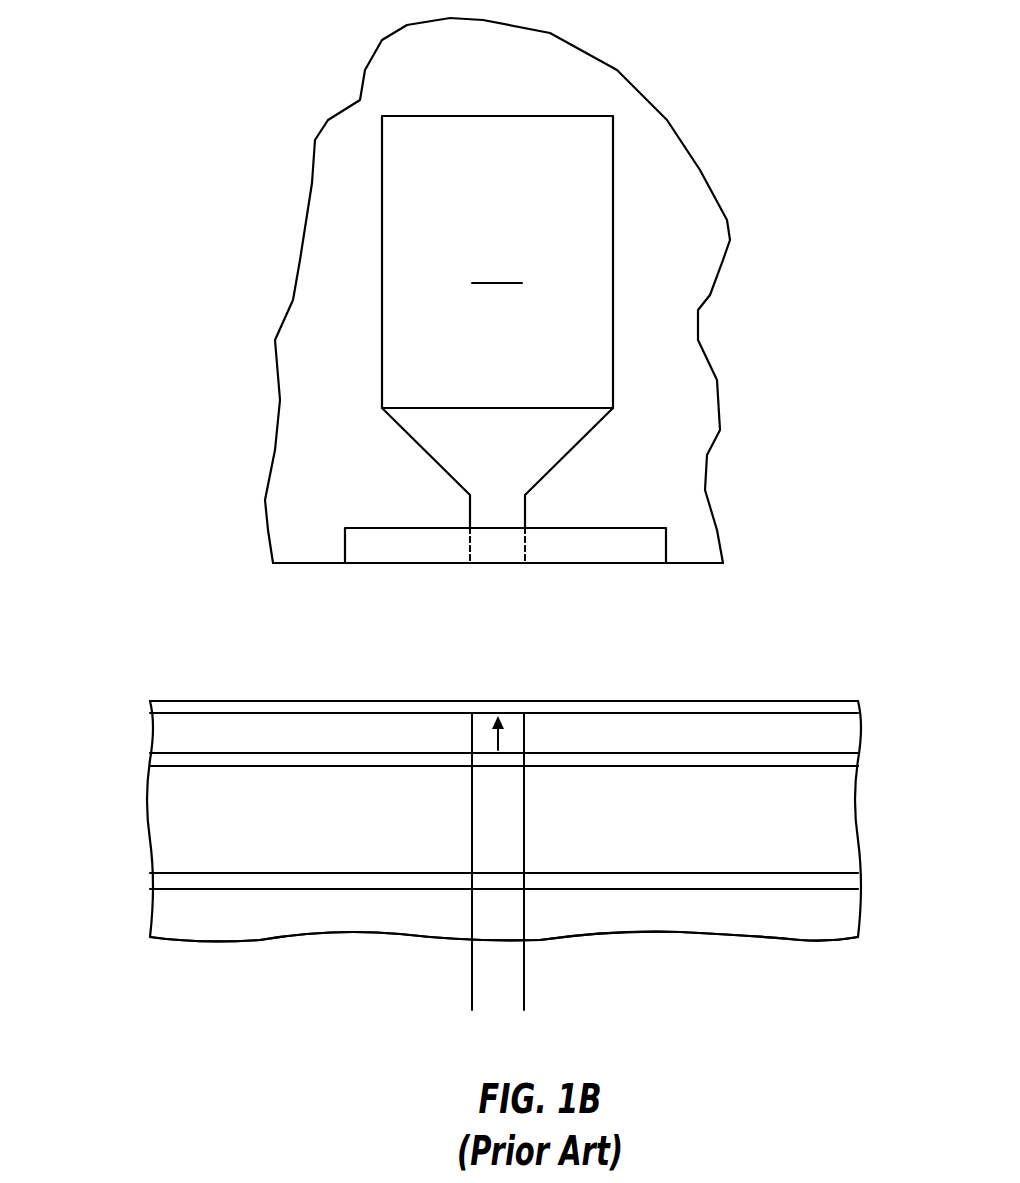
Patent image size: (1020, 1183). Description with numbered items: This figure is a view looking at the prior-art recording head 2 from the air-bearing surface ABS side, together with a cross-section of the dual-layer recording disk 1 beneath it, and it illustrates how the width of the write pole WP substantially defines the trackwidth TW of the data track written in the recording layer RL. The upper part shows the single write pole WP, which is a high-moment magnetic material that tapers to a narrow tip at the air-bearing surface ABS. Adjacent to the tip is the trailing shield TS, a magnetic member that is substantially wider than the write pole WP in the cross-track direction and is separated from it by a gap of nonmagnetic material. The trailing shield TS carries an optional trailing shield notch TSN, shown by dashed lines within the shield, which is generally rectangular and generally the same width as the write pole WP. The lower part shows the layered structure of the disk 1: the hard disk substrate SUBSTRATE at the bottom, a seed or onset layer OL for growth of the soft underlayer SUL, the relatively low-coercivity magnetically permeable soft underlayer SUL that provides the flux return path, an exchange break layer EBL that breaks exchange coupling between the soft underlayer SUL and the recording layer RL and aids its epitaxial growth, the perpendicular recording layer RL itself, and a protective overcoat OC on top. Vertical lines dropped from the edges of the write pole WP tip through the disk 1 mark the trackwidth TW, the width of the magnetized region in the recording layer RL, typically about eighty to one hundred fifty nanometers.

The recording head 2 is at (418, 58).
The write pole WP is at (497, 497).
The trailing shield TS is at (387, 547).
The trailing shield notch TSN is at (508, 543).
The air-bearing surface ABS is at (693, 563).
The recording disk 1 is at (58, 693).
The overcoat OC is at (160, 707).
The recording layer RL is at (504, 735).
The exchange break layer EBL is at (160, 760).
The soft underlayer SUL is at (504, 836).
The onset layer OL is at (160, 882).
The hard disk substrate SUBSTRATE is at (504, 917).
The trackwidth TW is at (433, 993).